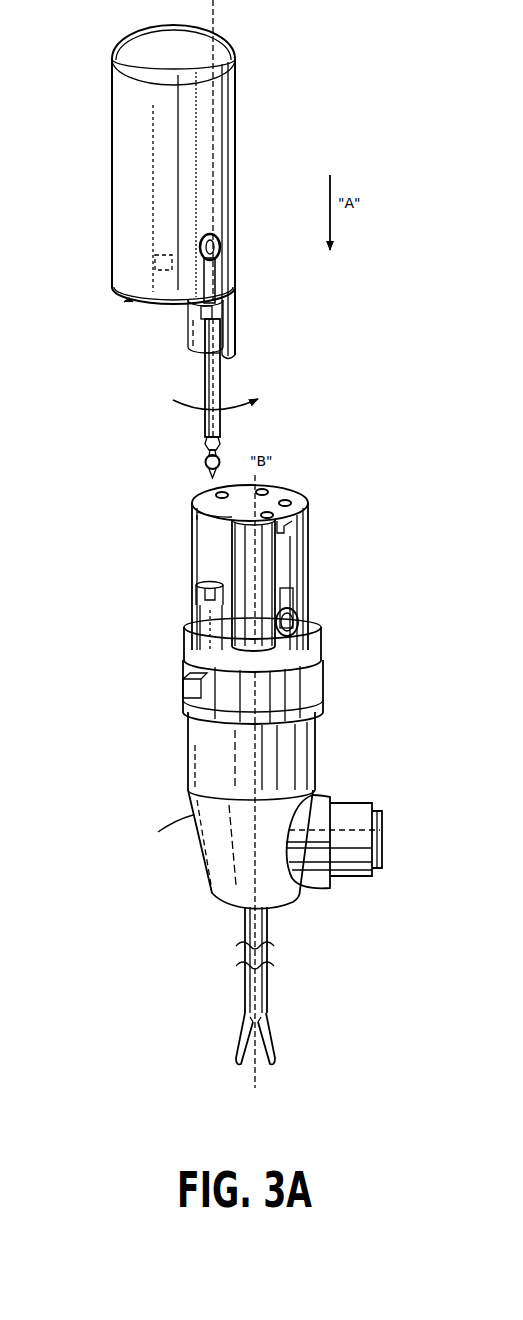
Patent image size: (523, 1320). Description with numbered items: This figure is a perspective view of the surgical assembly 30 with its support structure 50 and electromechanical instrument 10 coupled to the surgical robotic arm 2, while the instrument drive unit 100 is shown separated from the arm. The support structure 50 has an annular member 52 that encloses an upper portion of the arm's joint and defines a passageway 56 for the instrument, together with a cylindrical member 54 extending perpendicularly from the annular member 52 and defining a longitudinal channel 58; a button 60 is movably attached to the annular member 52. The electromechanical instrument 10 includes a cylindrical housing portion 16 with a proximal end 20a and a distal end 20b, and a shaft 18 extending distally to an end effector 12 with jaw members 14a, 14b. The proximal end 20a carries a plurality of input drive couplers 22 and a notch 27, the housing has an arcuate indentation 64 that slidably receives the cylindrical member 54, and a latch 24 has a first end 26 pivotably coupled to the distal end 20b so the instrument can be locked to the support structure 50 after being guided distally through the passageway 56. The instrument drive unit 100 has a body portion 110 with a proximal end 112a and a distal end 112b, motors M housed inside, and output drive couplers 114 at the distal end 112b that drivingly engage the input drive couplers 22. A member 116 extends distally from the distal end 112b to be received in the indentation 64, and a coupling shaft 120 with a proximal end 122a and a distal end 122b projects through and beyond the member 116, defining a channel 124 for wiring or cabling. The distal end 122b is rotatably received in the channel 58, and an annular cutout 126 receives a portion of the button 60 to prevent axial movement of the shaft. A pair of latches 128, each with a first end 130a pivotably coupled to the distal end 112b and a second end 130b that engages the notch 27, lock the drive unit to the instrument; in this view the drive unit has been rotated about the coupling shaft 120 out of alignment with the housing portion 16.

The surgical robotic arm 2 is at (192, 884).
The electromechanical instrument 10 is at (380, 551).
The end effector 12 is at (279, 1068).
The jaw member 14a is at (236, 1045).
The jaw member 14b is at (278, 1045).
The housing portion 16 is at (312, 576).
The shaft 18 is at (268, 987).
The proximal end 20a is at (306, 521).
The distal end 20b is at (240, 633).
The input drive couplers 22 is at (290, 500).
The latch 24 is at (318, 643).
The first end 26 is at (296, 602).
The notch 27 is at (310, 550).
The surgical assembly 30 is at (140, 435).
The support structure 50 is at (324, 669).
The annular member 52 is at (316, 698).
The cylindrical member 54 is at (205, 610).
The passageway 56 is at (316, 633).
The channel 58 is at (212, 582).
The button 60 is at (184, 692).
The arcuate indentation 64 is at (212, 526).
The instrument drive unit 100 is at (246, 178).
The body portion 110 is at (112, 116).
The proximal end 112a is at (226, 62).
The distal end 112b is at (112, 290).
The output drive couplers 114 is at (129, 305).
The member 116 is at (226, 312).
The coupling shaft 120 is at (224, 374).
The proximal end 122a is at (205, 360).
The distal end 122b is at (205, 462).
The channel 124 is at (222, 468).
The annular cutout 126 is at (207, 453).
The latch 128 is at (216, 264).
The first end 130a is at (216, 240).
The second end 130b is at (216, 314).
The motor m is at (155, 258).